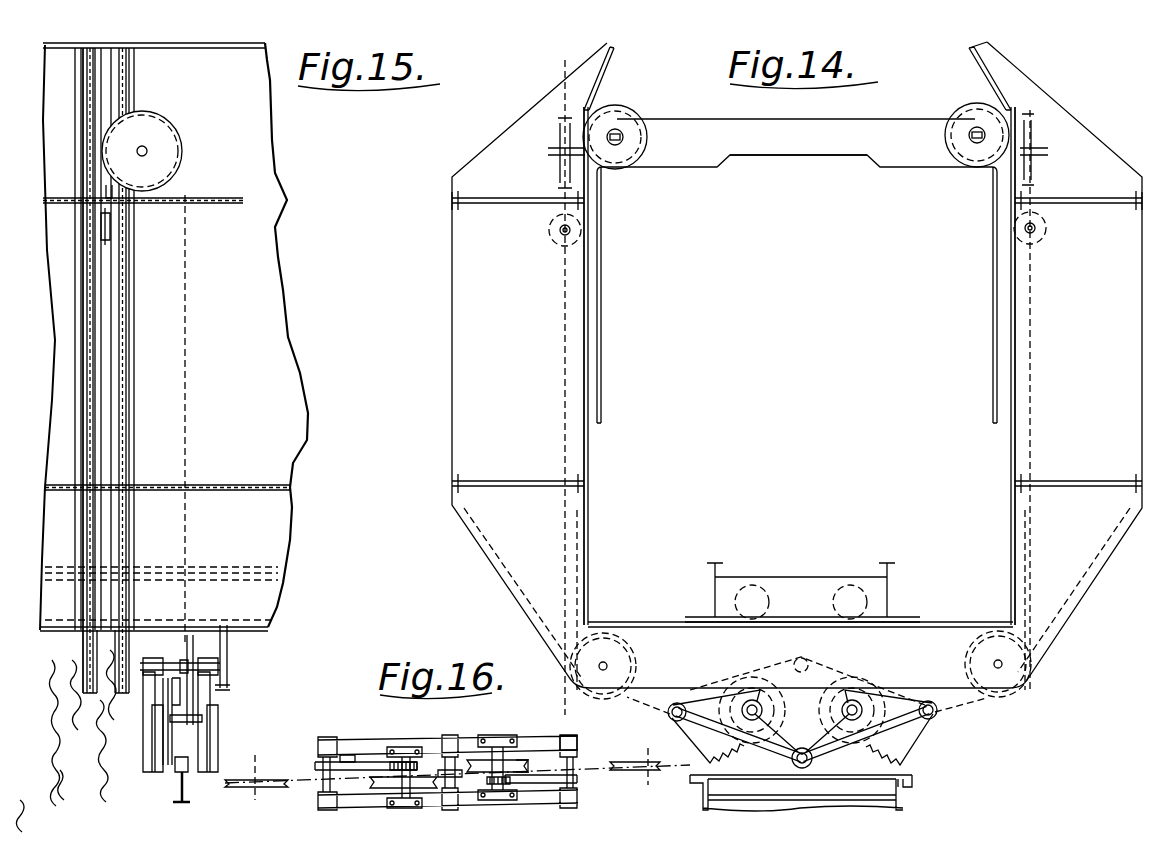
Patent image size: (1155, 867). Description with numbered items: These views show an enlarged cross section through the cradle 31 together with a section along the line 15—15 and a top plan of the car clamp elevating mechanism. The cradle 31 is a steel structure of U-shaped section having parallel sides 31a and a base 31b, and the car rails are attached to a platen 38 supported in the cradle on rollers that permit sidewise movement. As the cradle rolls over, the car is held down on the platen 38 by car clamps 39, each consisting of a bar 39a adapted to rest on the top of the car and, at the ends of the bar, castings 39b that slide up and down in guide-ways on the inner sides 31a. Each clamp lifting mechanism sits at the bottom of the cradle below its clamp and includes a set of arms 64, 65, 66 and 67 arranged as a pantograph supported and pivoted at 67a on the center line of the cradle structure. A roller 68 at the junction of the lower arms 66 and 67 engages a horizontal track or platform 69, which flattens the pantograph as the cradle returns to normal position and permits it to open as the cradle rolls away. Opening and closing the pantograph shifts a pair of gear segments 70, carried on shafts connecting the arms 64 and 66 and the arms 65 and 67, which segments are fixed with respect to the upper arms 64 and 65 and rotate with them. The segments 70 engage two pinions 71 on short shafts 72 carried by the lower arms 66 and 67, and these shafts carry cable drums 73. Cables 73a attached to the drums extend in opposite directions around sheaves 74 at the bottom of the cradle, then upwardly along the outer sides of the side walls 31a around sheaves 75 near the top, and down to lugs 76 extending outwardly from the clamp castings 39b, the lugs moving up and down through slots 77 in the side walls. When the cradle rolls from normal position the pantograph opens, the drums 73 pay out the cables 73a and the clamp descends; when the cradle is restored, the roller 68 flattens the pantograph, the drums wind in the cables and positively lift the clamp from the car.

In FIG. 14, the section line 15— 15 is at (570, 72).
In FIG. 15, the cradle 31 is at (288, 363).
In FIG. 14, the cradle 31 is at (450, 400).
In FIG. 14, the parallel sides 31a is at (600, 525).
In FIG. 14, the base 31b is at (948, 618).
In FIG. 14, the platen 38 is at (814, 575).
In FIG. 14, the car clamps 39 is at (797, 289).
In FIG. 14, the bar 39a is at (888, 150).
In FIG. 14, the castings 39b is at (602, 262).
In FIG. 15, the upper arm 64 is at (210, 698).
In FIG. 14, the upper arm 64 is at (700, 697).
In FIG. 16, the upper arm 64 is at (402, 740).
In FIG. 14, the upper arm 65 is at (850, 670).
In FIG. 16, the upper arm 65 is at (580, 750).
In FIG. 15, the lower arm 66 is at (217, 752).
In FIG. 14, the lower arm 66 is at (740, 740).
In FIG. 16, the lower arm 66 is at (357, 735).
In FIG. 14, the lower arm 67 is at (865, 739).
In FIG. 16, the lower arm 67 is at (565, 742).
In FIG. 14, the pivot 67a is at (825, 651).
In FIG. 15, the roller 68 is at (186, 780).
In FIG. 14, the roller 68 is at (801, 793).
In FIG. 16, the roller 68 is at (486, 776).
In FIG. 15, the track or platform 69 is at (188, 799).
In FIG. 14, the track or platform 69 is at (910, 786).
In FIG. 15, the gear segments 70 is at (217, 726).
In FIG. 14, the gear segments 70 is at (690, 748).
In FIG. 16, the gear segments 70 is at (332, 745).
In FIG. 14, the pinions 71 is at (765, 708).
In FIG. 16, the pinions 71 is at (418, 762).
In FIG. 14, the short shafts 72 is at (752, 722).
In FIG. 16, the short shafts 72 is at (520, 762).
In FIG. 15, the cable drums 73 is at (172, 732).
In FIG. 14, the cable drums 73 is at (775, 720).
In FIG. 16, the cable drums 73 is at (385, 777).
In FIG. 15, the cables 73a is at (187, 308).
In FIG. 14, the cables 73a is at (565, 385).
In FIG. 15, the sheaves 74 is at (195, 650).
In FIG. 14, the sheaves 74 is at (612, 640).
In FIG. 16, the sheaves 74 is at (245, 788).
In FIG. 15, the sheaves 75 is at (168, 176).
In FIG. 14, the sheaves 75 is at (552, 148).
In FIG. 15, the lugs 76 is at (112, 243).
In FIG. 14, the lugs 76 is at (556, 238).
In FIG. 15, the slots 77 is at (125, 345).